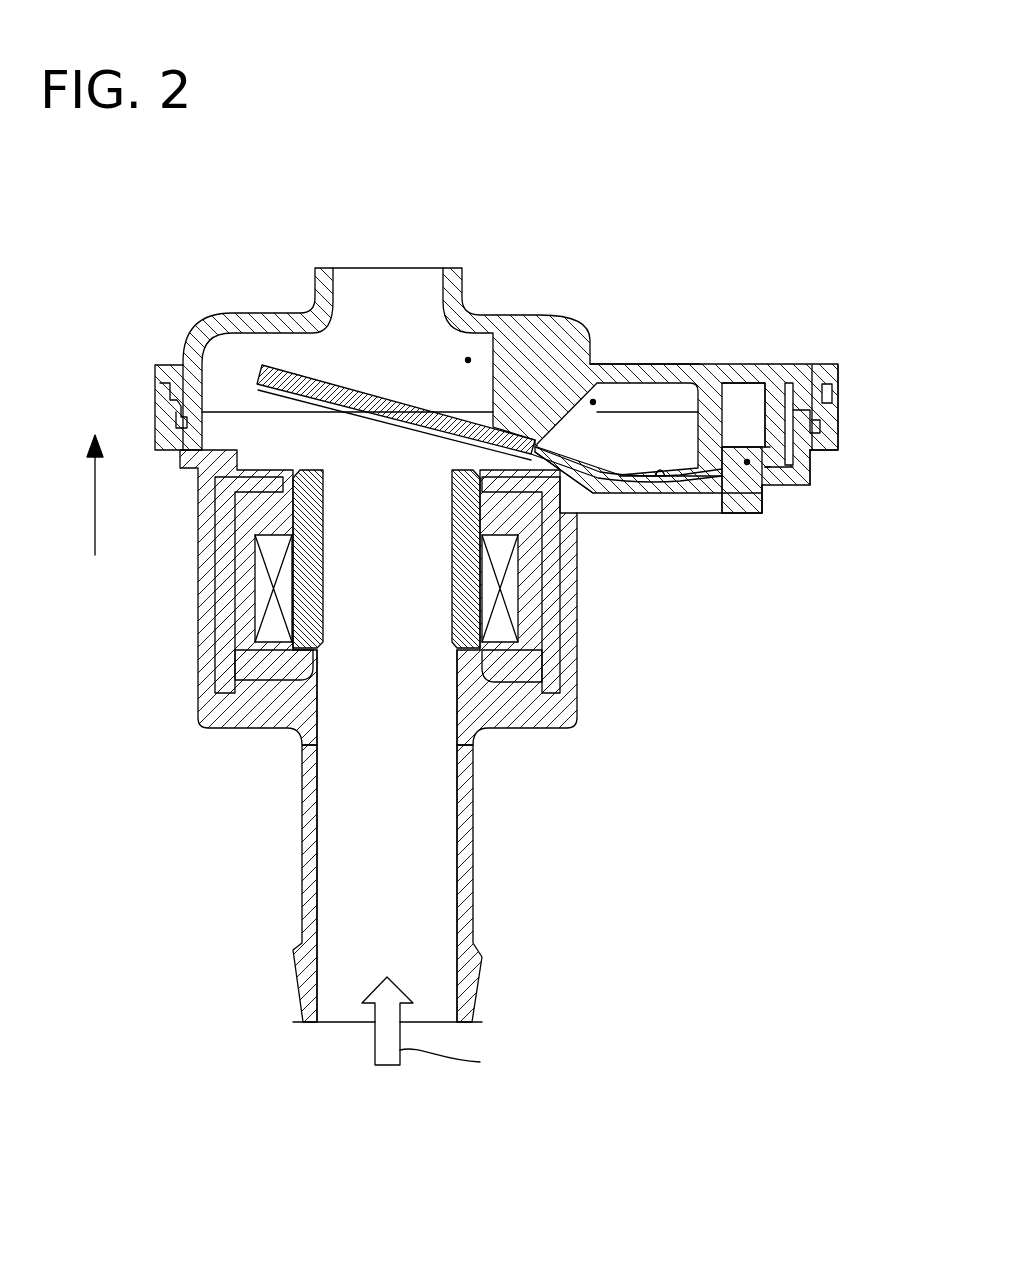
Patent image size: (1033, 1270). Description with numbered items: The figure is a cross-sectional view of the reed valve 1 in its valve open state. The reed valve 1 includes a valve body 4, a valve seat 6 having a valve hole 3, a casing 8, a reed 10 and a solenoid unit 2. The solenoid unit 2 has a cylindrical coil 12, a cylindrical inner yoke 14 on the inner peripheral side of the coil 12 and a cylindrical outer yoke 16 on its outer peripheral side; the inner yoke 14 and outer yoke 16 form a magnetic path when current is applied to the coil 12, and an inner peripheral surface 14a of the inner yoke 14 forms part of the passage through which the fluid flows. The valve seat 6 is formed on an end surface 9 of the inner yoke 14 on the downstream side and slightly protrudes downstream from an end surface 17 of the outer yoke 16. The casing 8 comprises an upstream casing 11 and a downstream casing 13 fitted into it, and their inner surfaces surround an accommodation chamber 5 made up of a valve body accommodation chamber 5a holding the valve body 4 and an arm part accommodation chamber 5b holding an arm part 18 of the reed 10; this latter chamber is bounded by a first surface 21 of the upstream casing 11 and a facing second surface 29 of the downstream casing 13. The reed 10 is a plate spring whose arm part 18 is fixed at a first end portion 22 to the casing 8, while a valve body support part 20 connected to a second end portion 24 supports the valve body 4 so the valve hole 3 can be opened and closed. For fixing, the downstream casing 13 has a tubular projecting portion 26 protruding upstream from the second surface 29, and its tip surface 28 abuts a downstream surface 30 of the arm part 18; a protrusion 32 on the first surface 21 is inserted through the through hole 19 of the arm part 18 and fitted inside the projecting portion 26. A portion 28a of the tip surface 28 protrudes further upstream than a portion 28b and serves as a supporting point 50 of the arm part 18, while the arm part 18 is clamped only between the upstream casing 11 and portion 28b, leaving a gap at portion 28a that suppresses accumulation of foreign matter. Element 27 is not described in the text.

The reed valve 1 is at (824, 195).
The solenoid unit 2 is at (255, 692).
The valve hole 3 is at (360, 470).
The valve body 4 is at (270, 470).
The accommodation chamber 5 is at (687, 339).
The valve body accommodation chamber 5a is at (687, 339).
The arm part accommodation chamber 5b is at (468, 358).
The valve seat 6 is at (255, 380).
The end surface of inner yoke 9 is at (275, 359).
The casing 8 is at (900, 280).
The reed 10 is at (646, 438).
The upstream casing 11 is at (838, 425).
The coil 12 is at (522, 636).
The downstream casing 13 is at (833, 382).
The inner yoke 14 is at (478, 750).
The inner peripheral surface 14a is at (465, 755).
The outer yoke 16 is at (562, 690).
The end surface of outer yoke 17 is at (178, 392).
The arm part 18 is at (606, 482).
The through hole 19 is at (749, 464).
The valve body support part 20 is at (381, 393).
The first surface 21 is at (620, 484).
The first end portion 22 is at (787, 474).
The second end portion 24 is at (557, 470).
The tubular projecting portion 26 is at (740, 385).
The seal portion 27 is at (700, 482).
The tip surface 28 is at (728, 478).
The portion of tip surface 28a is at (770, 440).
The portion of tip surface 28b is at (792, 462).
The second surface 29 is at (650, 385).
The downstream surface 30 is at (665, 482).
The protrusion 32 is at (740, 478).
The supporting point 50 is at (811, 522).